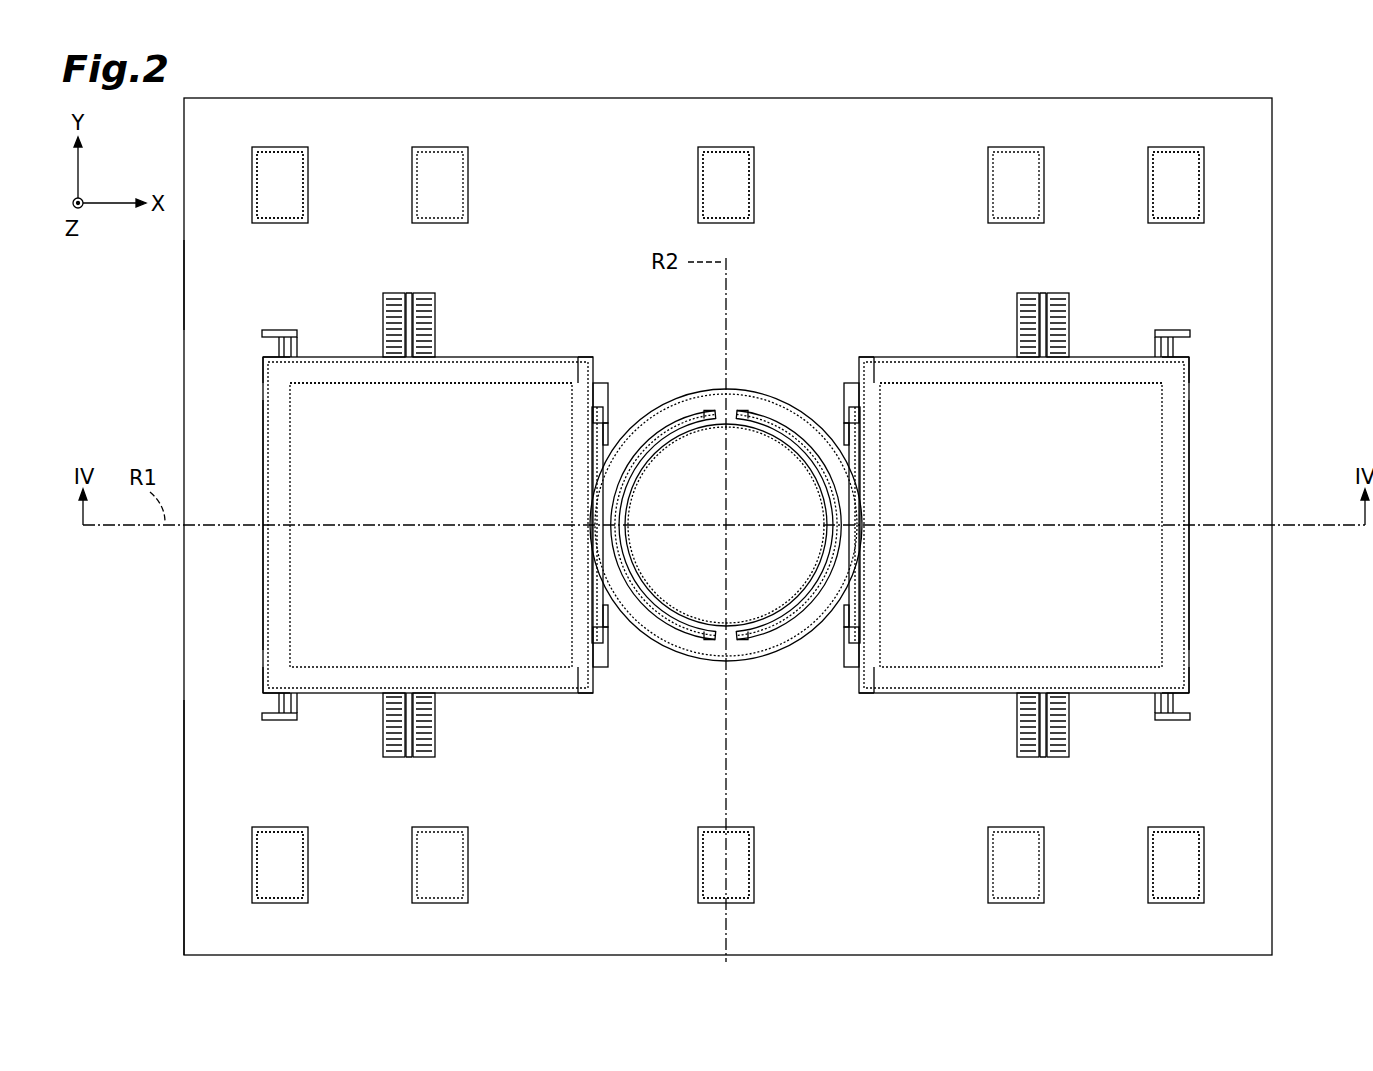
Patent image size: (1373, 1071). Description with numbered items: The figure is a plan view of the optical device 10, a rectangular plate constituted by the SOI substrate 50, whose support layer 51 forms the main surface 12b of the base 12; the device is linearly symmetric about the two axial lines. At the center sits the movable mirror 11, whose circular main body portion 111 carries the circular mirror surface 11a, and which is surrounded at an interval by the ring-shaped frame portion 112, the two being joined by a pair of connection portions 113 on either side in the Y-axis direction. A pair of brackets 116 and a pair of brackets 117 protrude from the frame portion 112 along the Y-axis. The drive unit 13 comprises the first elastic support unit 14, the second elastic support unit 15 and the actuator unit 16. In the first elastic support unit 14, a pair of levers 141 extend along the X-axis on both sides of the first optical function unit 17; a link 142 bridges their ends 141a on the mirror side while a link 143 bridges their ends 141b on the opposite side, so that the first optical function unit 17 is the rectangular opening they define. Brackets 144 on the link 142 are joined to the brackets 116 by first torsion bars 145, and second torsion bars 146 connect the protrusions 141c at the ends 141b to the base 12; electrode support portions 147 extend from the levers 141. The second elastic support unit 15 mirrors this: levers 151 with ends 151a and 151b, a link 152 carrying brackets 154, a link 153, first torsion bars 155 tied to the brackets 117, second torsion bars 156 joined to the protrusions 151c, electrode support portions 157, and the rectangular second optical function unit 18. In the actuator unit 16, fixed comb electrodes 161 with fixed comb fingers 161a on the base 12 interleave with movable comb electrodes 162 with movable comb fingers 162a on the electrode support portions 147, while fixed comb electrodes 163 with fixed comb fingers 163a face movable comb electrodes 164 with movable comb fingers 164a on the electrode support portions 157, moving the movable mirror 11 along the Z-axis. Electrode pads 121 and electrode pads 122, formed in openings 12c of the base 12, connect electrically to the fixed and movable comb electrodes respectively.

The optical device 10 is at (1280, 110).
The movable mirror 11 is at (797, 645).
The mirror surface 11a is at (672, 511).
The main body portion 111 is at (638, 618).
The frame portion 112 is at (683, 655).
The connection portions 113 is at (742, 412).
The base 12 is at (176, 330).
The main surface 12b is at (186, 270).
The openings 12c is at (259, 173).
The electrode pads 121 is at (751, 178).
The electrode pads 122 is at (294, 174).
The drive unit 13 is at (723, 545).
The first elastic support unit 14 is at (911, 702).
The second elastic support unit 15 is at (541, 702).
The actuator unit 16 is at (1052, 765).
The first optical function unit 17 is at (998, 508).
The second optical function unit 18 is at (400, 508).
The brackets 116 is at (866, 450).
The brackets 117 is at (598, 458).
The levers 141 is at (936, 357).
The ends 141a is at (863, 365).
The ends 141b is at (1153, 387).
The protrusion 141c is at (1190, 365).
The link 142 is at (862, 500).
The link 143 is at (1186, 497).
The brackets 144 is at (850, 395).
The first torsion bars 145 is at (868, 410).
The second torsion bars 146 is at (1188, 343).
The electrode support portions 147 is at (1046, 295).
The levers 151 is at (512, 357).
The ends 151a is at (590, 365).
The ends 151b is at (298, 387).
The protrusion 151c is at (262, 365).
The link 152 is at (592, 500).
The link 153 is at (268, 497).
The brackets 154 is at (602, 395).
The first torsion bars 155 is at (598, 425).
The second torsion bars 156 is at (266, 343).
The electrode support portions 157 is at (409, 295).
The fixed comb electrodes 161 is at (1037, 529).
The fixed comb fingers 161a is at (985, 775).
The movable comb electrodes 162 is at (1059, 525).
The movable comb fingers 162a is at (1065, 740).
The fixed comb electrodes 163 is at (419, 531).
The fixed comb fingers 163a is at (392, 333).
The movable comb electrodes 164 is at (400, 526).
The movable comb fingers 164a is at (350, 745).
The SOI substrate 50 is at (136, 827).
The support layer 51 is at (200, 798).